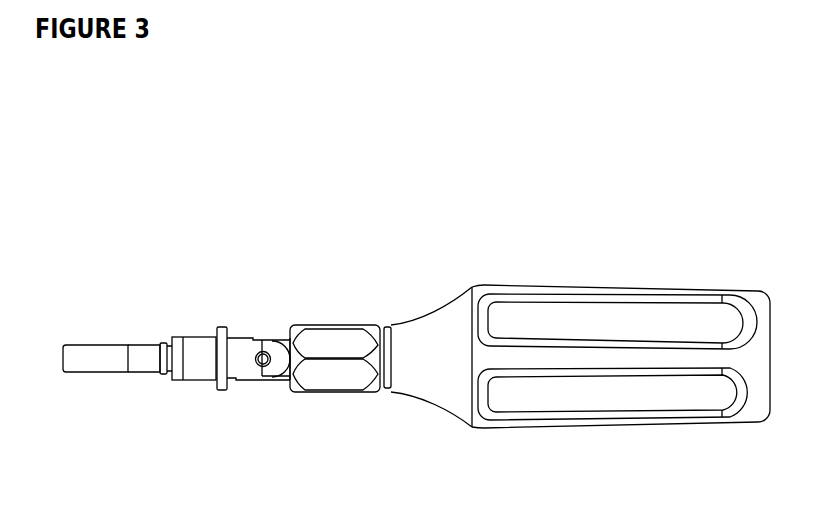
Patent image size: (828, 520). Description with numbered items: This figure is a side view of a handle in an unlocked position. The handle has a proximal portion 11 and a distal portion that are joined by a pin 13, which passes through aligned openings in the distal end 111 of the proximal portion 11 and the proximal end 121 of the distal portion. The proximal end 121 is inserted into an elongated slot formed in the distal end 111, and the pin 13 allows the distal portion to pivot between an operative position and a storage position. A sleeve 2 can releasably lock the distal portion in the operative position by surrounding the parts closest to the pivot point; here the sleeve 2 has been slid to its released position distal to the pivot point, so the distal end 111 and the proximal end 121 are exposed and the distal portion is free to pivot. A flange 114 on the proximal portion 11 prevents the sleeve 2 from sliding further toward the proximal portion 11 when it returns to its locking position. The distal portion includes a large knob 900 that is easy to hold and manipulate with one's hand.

The proximal portion 11 is at (147, 343).
The distal end of the proximal portion 111 is at (250, 348).
The flange 114 is at (216, 381).
The proximal end of the distal portion 121 is at (278, 373).
The pin 13 is at (268, 351).
The sleeve 2 is at (337, 338).
The knob 900 is at (612, 317).